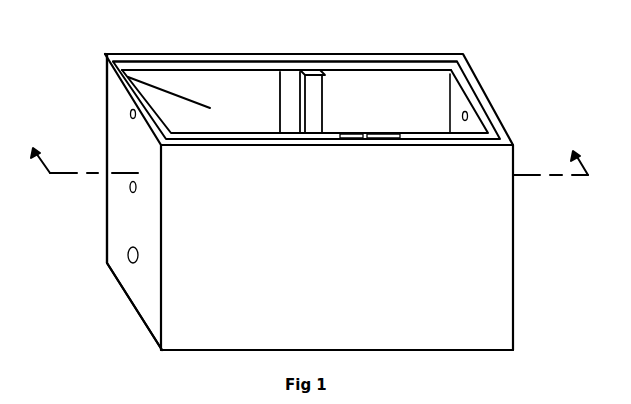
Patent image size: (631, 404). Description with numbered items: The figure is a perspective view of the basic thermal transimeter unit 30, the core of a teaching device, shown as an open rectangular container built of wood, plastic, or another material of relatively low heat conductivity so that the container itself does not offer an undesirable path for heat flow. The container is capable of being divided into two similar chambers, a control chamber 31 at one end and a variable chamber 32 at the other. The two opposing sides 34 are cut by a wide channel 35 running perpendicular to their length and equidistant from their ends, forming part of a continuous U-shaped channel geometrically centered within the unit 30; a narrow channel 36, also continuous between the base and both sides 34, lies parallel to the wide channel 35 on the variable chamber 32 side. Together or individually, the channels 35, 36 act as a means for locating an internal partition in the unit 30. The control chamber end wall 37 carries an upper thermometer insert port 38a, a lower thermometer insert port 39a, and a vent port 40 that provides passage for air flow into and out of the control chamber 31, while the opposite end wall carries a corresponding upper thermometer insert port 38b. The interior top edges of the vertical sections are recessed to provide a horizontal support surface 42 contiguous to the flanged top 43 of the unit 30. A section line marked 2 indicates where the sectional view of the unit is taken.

The basic thermal transimeter unit 30 is at (230, 355).
The control chamber 31 is at (271, 95).
The variable chamber 32 is at (442, 102).
The opposing sides 34 is at (229, 55).
The wide channel 35 is at (327, 135).
The narrow channel 36 is at (322, 73).
The control chamber end wall 37 is at (132, 150).
The upper thermometer insert port 38a is at (130, 113).
The upper thermometer insert port 38b is at (462, 117).
The lower thermometer insert port 39a is at (132, 187).
The vent port 40 is at (128, 256).
The horizontal support surface 42 is at (375, 72).
The flanged top 43 is at (291, 62).
The section line 2- 2 is at (306, 153).